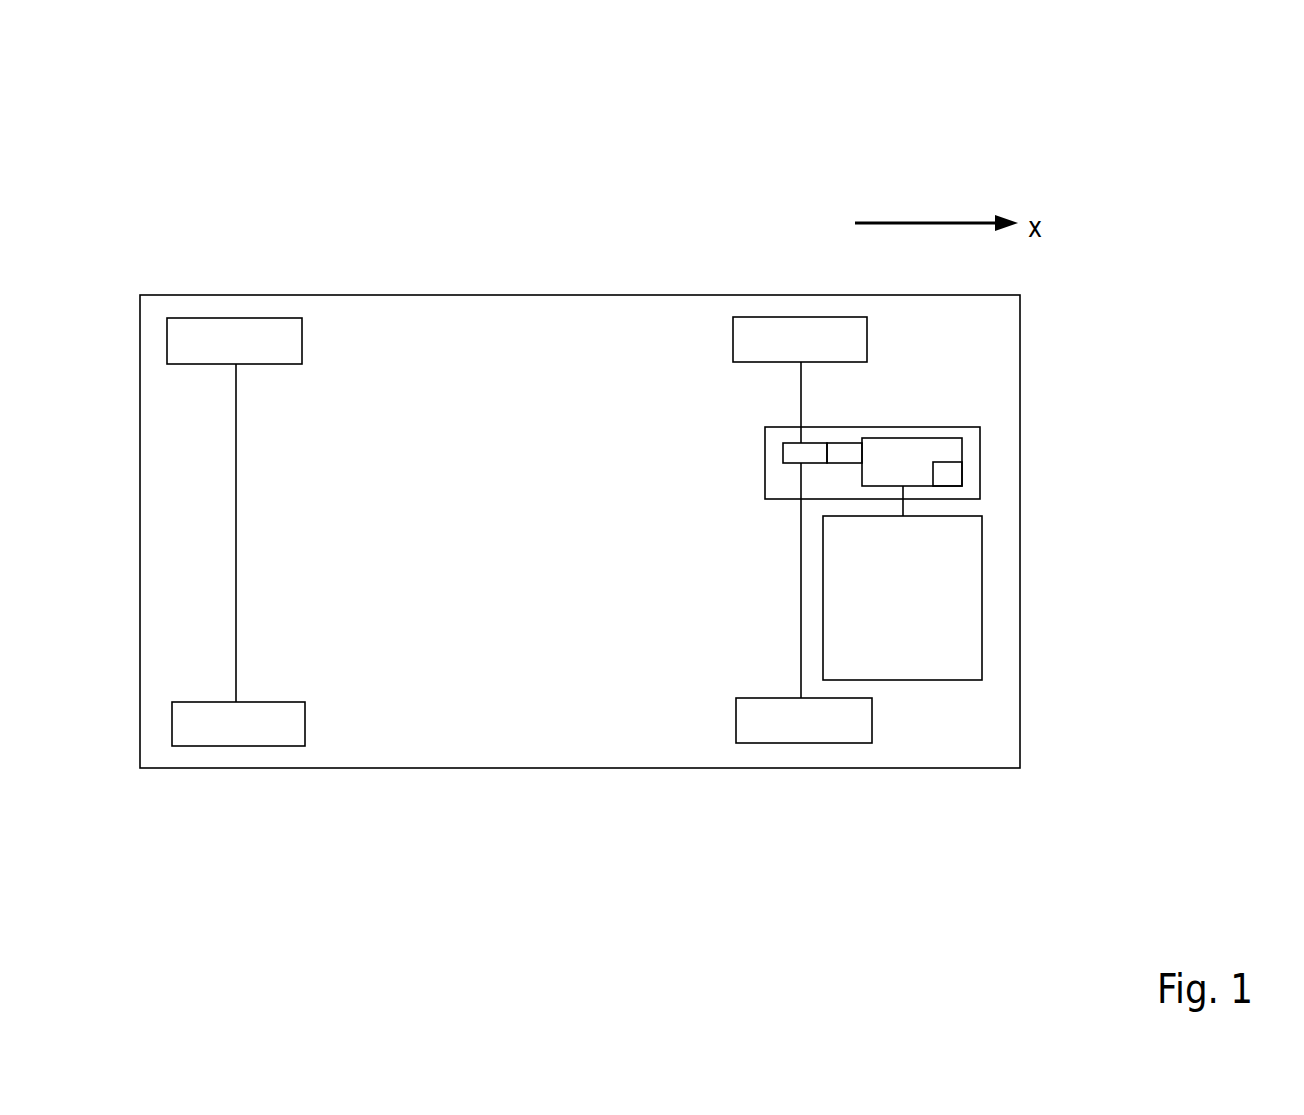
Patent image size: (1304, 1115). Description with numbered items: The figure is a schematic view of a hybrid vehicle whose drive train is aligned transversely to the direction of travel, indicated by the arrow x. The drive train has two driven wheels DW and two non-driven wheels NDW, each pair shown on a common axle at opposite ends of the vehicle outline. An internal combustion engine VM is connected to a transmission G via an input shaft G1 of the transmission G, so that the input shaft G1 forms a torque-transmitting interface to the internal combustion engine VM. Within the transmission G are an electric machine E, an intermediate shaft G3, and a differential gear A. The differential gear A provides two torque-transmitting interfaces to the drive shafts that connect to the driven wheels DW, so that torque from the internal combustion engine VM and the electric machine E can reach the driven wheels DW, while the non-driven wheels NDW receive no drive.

The non-driven wheels NDW is at (207, 317).
The driven wheels DW is at (833, 317).
The differential gear A is at (785, 440).
The transmission G is at (955, 427).
The intermediate shaft G3 is at (845, 443).
The electric machine E is at (963, 473).
The input shaft G1 is at (908, 506).
The internal combustion engine VM is at (982, 625).